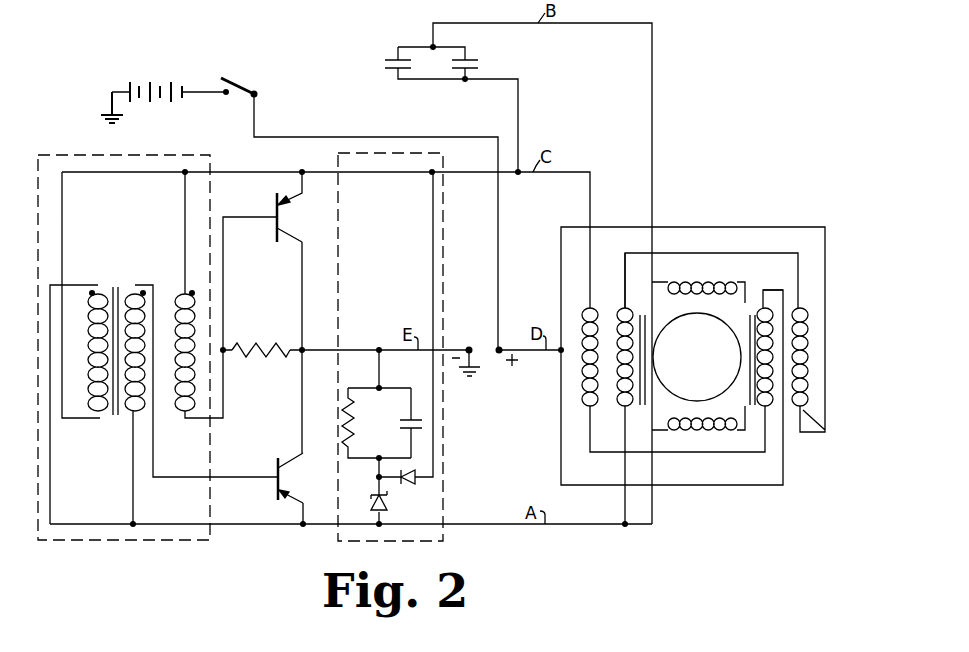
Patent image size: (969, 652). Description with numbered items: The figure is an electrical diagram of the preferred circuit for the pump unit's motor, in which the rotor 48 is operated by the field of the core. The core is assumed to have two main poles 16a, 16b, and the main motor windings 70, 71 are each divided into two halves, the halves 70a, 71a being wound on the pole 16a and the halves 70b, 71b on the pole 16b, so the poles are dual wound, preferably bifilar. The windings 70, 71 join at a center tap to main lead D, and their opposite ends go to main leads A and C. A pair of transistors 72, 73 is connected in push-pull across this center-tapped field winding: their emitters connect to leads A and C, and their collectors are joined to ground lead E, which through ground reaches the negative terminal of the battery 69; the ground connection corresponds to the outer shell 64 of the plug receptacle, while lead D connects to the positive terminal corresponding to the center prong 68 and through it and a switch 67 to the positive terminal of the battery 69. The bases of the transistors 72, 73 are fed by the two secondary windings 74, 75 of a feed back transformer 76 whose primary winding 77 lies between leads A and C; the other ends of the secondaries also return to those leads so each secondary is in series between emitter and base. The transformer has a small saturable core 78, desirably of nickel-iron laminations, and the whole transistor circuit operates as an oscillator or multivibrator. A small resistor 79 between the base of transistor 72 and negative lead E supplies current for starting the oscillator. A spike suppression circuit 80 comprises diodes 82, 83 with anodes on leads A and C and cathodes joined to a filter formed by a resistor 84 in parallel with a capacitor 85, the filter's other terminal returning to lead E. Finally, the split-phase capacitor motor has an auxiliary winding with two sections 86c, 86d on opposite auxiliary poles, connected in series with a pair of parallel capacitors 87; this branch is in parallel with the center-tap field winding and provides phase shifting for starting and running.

The power supply battery 69 is at (173, 80).
The switch 67 is at (252, 80).
The parallel capacitors 87 is at (459, 70).
The feed back transformer 76 is at (157, 540).
The saturable core 78 is at (112, 292).
The primary winding 77 is at (92, 412).
The secondary winding 75 is at (129, 413).
The secondary winding 74 is at (188, 413).
The transistor 72 is at (279, 222).
The transistor 73 is at (277, 481).
The resistor 79 is at (267, 347).
The outer shell 64 is at (468, 346).
The center prong 68 is at (501, 346).
The spike suppression circuit 80 is at (436, 541).
The resistor 84 is at (351, 432).
The capacitor 85 is at (403, 430).
The diode 82 is at (376, 512).
The diode 83 is at (413, 484).
The main motor winding 70 is at (611, 292).
The main motor winding 71 is at (781, 289).
The winding half 70a is at (583, 376).
The winding half 70b is at (623, 408).
The winding half 71a is at (762, 312).
The winding half 71b is at (816, 381).
The auxiliary winding section 86c is at (692, 282).
The auxiliary winding section 86d is at (700, 432).
The main pole 16a is at (644, 342).
The main pole 16b is at (752, 380).
The rotor 48 is at (708, 366).